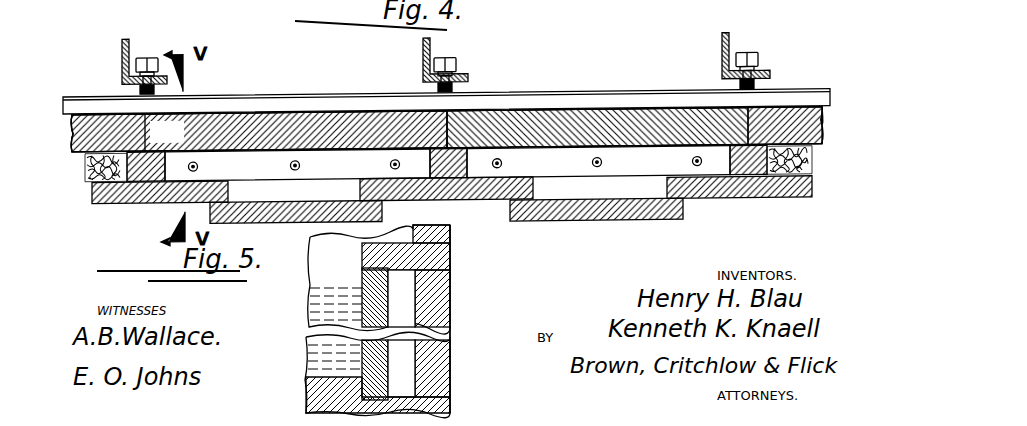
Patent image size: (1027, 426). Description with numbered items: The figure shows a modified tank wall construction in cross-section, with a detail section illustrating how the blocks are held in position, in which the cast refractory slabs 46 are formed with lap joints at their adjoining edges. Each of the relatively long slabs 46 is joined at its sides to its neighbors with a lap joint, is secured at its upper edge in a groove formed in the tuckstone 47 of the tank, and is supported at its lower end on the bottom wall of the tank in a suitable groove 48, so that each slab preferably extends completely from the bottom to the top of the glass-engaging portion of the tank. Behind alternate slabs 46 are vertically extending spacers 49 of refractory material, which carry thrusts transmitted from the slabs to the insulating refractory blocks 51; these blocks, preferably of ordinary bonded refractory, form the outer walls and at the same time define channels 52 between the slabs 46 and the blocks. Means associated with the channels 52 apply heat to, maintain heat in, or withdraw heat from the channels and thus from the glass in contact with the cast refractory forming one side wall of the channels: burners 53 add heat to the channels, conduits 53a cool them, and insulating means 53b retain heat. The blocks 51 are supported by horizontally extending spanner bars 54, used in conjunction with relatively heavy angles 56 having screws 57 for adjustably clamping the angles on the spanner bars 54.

In FIG. 4, the cast refractory slabs 46 is at (138, 205).
In FIG. 5, the tuckstone 47 is at (443, 259).
In FIG. 5, the grooves 48 is at (407, 392).
In FIG. 4, the spacers 49 is at (296, 131).
In FIG. 4, the insulating refractory blocks 51 is at (220, 120).
In FIG. 5, the insulating refractory blocks 51 is at (442, 300).
In FIG. 4, the channels 52 is at (338, 173).
In FIG. 4, the burners 53 is at (289, 169).
In FIG. 4, the conduits 53a is at (692, 168).
In FIG. 4, the insulating means 53b is at (828, 213).
In FIG. 4, the spanner bars 54 is at (84, 100).
In FIG. 4, the angles 56 is at (121, 42).
In FIG. 4, the screws 57 is at (148, 58).